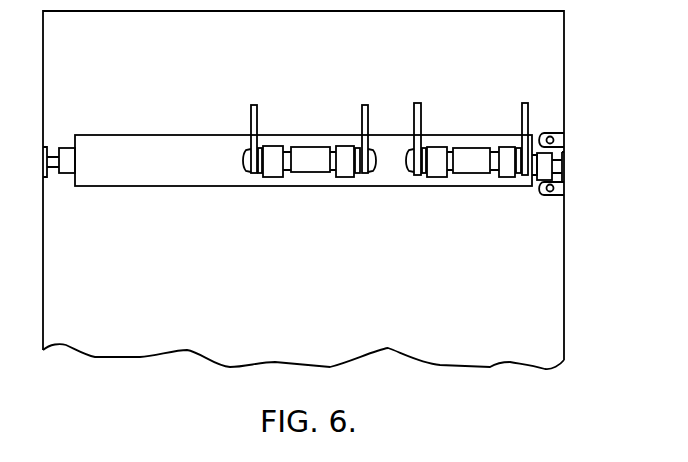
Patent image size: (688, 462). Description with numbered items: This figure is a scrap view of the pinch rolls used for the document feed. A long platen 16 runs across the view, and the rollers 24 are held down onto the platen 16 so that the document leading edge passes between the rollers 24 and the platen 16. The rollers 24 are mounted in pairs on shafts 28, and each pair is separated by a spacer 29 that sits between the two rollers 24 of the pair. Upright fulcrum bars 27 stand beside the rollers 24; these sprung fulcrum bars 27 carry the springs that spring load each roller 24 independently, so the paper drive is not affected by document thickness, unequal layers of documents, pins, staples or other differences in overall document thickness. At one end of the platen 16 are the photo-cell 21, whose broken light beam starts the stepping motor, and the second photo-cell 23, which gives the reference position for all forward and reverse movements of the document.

The platen 16 is at (95, 145).
The photo-cell 21 is at (563, 185).
The second photo-cell 23 is at (563, 137).
The rollers 24 is at (273, 175).
The fulcrum bars 27 is at (251, 120).
The shafts 28 is at (238, 160).
The spacer 29 is at (310, 175).